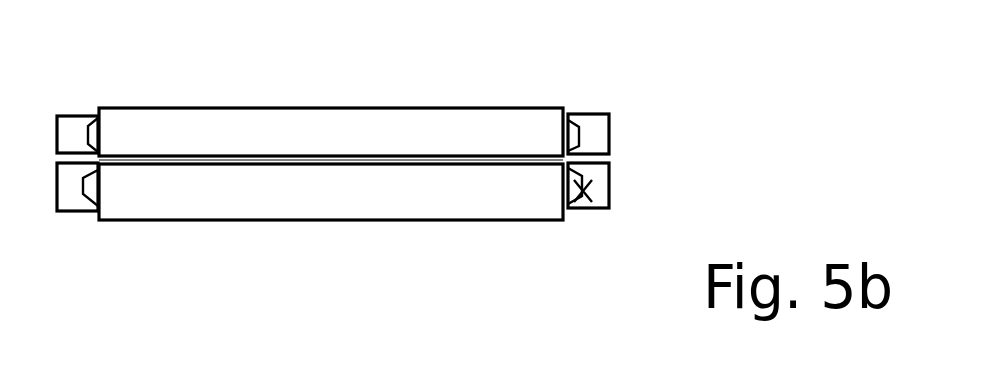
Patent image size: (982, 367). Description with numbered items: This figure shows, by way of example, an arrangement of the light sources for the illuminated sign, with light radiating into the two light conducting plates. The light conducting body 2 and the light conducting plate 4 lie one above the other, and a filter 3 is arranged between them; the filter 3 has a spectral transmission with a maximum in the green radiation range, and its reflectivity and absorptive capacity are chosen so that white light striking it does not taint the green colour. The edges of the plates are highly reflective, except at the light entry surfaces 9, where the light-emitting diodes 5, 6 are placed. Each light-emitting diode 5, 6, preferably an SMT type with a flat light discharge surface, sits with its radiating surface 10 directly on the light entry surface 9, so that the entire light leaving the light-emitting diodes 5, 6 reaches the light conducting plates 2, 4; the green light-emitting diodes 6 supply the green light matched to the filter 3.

The light conducting body 2 is at (355, 198).
The filter 3 is at (445, 160).
The light conducting plate 4 is at (342, 137).
The light-emitting diode 5 is at (590, 190).
The green light-emitting diode 6 is at (69, 141).
The light entry surface 9 is at (559, 139).
The radiating surface 10 is at (592, 212).